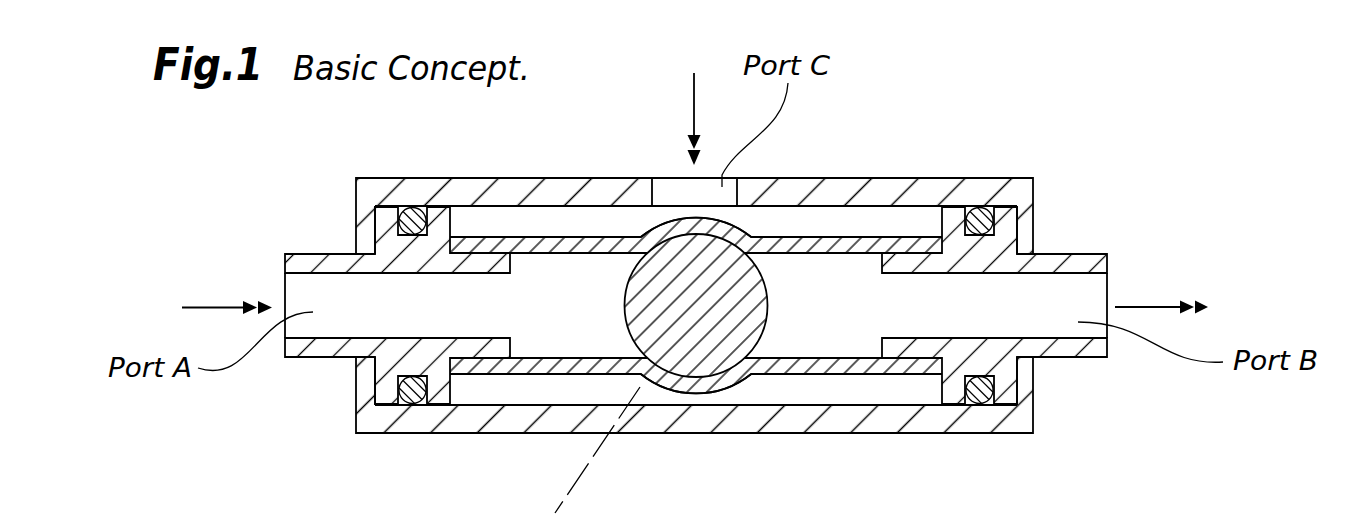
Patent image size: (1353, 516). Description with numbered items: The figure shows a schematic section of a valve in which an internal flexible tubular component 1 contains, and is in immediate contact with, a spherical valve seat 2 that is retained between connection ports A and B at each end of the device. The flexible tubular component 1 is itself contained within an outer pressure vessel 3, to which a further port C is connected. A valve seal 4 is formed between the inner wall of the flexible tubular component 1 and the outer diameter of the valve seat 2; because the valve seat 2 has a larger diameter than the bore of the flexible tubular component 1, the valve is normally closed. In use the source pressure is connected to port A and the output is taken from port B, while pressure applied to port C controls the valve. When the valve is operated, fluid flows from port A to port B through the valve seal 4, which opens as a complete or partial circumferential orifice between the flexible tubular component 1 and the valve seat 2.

The internal flexible tubular component 1 is at (837, 365).
The spherical valve seat 2 is at (695, 315).
The outer pressure vessel 3 is at (313, 258).
The valve seal 4 is at (640, 263).